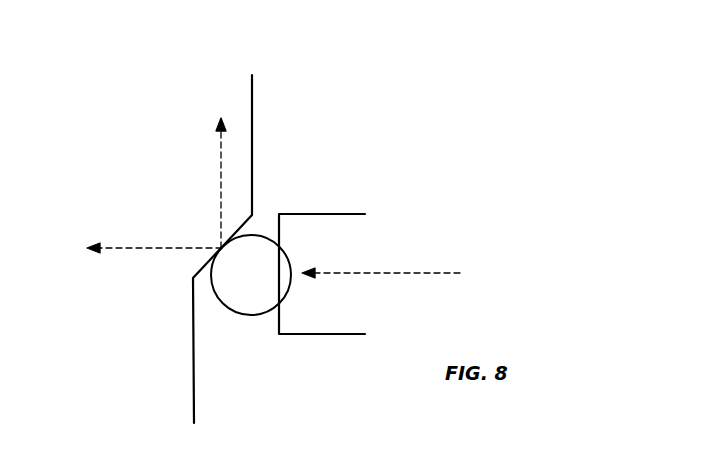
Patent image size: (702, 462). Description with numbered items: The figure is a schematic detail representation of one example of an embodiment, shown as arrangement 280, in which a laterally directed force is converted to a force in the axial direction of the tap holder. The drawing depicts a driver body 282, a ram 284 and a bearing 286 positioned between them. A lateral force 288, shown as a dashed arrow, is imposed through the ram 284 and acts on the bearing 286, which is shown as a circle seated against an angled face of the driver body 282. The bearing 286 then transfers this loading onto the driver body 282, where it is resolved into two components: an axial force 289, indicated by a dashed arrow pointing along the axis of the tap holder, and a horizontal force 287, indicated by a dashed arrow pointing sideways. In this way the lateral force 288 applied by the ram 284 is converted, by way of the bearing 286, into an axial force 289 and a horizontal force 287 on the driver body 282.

The cell arrangement 280 is at (360, 132).
The driver body 282 is at (252, 125).
The ram 284 is at (332, 213).
The bearing 286 is at (251, 275).
The horizontal force 287 is at (166, 246).
The lateral force 288 is at (403, 273).
The axial force 289 is at (220, 182).